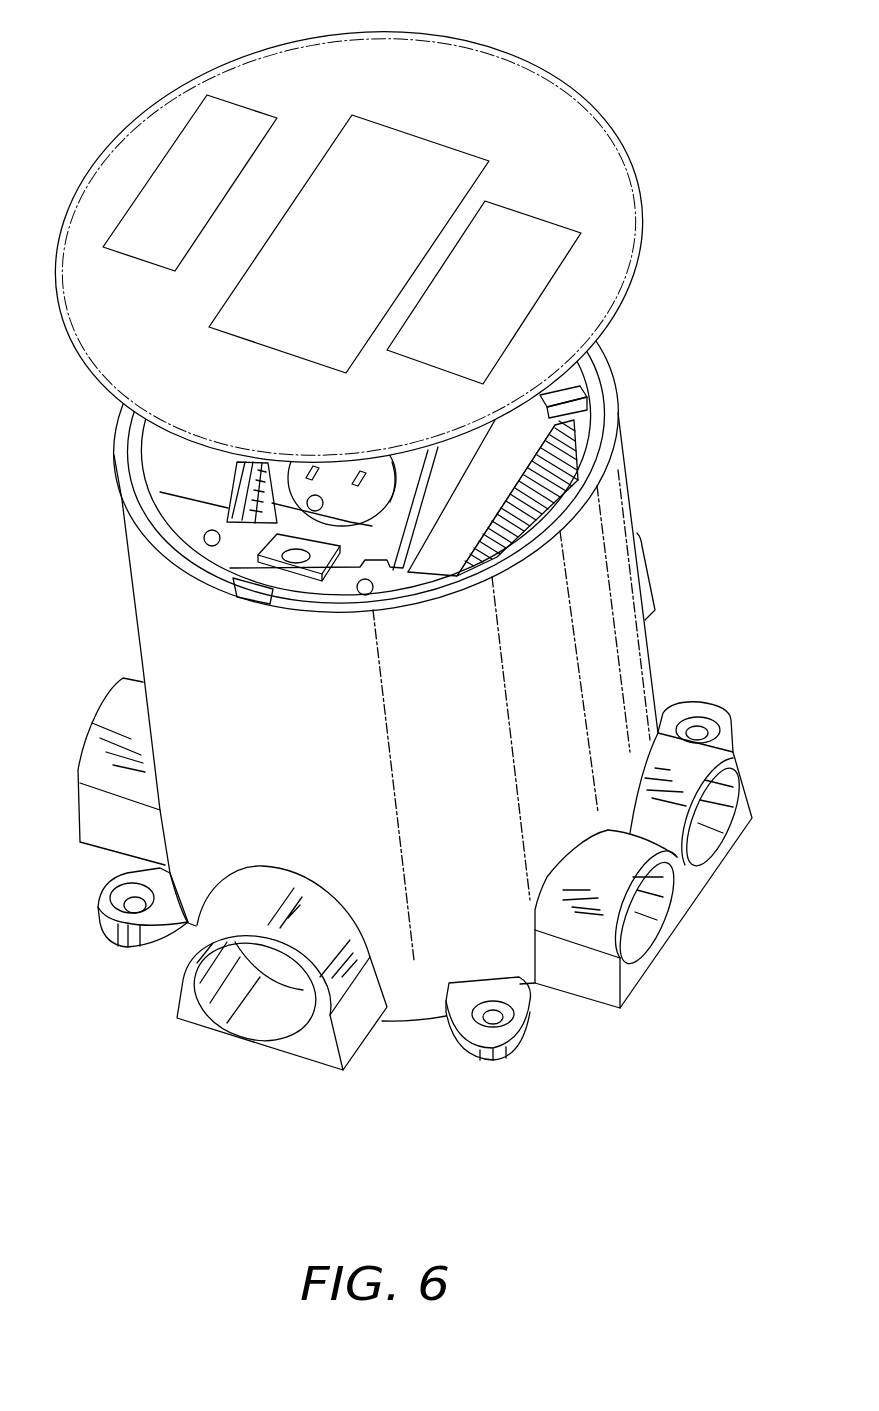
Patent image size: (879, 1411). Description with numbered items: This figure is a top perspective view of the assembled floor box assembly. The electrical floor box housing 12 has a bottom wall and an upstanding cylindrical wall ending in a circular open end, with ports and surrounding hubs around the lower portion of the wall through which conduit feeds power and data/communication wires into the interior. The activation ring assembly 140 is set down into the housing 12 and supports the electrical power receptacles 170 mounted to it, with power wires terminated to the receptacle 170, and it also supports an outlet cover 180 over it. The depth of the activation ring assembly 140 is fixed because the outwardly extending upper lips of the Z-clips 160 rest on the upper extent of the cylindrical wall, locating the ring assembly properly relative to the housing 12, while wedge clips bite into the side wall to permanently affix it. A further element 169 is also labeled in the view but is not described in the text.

The floor box housing 12 is at (637, 671).
The activation ring assembly 140 is at (575, 380).
The Z-clips 160 is at (237, 590).
The flange rim 169 is at (500, 566).
The electrical power receptacle 170 is at (290, 493).
The outlet cover 180 is at (495, 88).